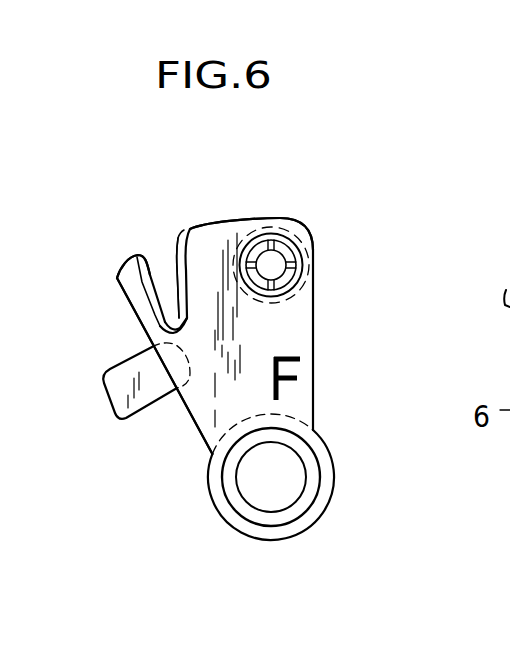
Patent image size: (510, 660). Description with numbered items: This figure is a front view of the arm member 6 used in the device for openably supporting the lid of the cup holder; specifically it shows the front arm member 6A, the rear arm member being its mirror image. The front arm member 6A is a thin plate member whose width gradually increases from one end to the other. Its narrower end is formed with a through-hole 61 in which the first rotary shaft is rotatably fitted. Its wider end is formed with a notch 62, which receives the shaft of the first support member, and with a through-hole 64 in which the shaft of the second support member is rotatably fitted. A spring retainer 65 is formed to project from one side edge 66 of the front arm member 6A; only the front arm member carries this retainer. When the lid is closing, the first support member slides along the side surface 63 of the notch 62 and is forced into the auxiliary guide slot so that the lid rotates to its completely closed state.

The arm member 6 is at (325, 386).
The front arm member 6A is at (236, 222).
The through-hole 61 is at (304, 484).
The notch 62 is at (146, 262).
The side surface 63 is at (178, 266).
The through-hole 64 is at (289, 277).
The spring retainer 65 is at (104, 382).
The side edge 66 is at (190, 403).